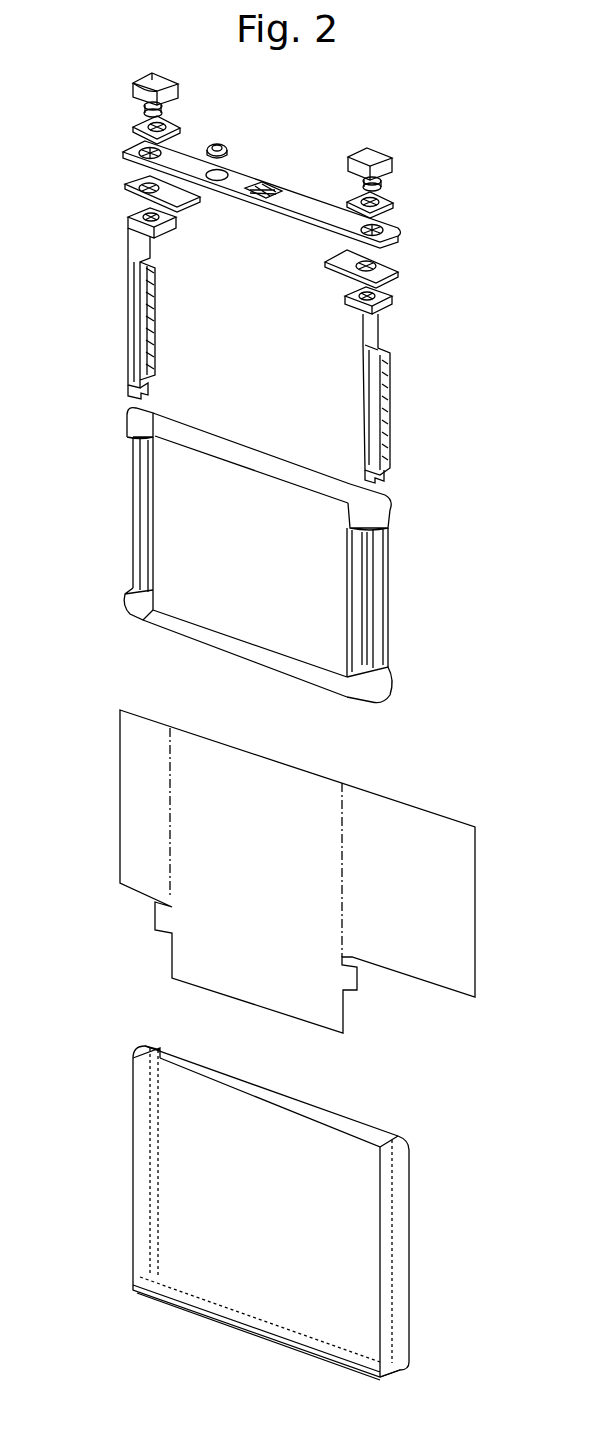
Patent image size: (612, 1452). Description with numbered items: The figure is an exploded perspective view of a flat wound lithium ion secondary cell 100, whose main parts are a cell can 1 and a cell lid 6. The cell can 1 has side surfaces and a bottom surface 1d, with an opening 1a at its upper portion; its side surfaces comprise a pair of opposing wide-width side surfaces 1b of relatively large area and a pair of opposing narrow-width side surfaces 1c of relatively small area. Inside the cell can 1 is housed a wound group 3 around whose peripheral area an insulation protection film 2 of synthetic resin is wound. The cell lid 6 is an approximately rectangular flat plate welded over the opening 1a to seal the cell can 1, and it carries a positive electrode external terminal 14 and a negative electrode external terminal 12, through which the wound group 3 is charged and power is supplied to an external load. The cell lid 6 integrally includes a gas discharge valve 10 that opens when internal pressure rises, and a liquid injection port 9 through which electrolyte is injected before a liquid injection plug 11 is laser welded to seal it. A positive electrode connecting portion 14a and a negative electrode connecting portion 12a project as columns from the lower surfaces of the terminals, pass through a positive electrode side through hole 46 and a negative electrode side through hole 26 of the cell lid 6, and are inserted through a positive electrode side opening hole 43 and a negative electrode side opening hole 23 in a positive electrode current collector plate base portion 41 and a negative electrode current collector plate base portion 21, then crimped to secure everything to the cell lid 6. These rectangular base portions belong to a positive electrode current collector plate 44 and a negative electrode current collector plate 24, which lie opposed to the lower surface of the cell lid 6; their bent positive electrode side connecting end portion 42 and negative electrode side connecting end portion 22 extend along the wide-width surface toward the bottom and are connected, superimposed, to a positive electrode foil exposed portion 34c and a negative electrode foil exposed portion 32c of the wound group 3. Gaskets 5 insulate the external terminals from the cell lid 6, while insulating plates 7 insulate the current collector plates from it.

The flat wound lithium ion secondary cell 100 is at (503, 186).
The cell can 1 is at (416, 1245).
The opening 1a is at (135, 1052).
The wide-width side surfaces 1b is at (190, 1220).
The narrow-width side surfaces 1c is at (400, 1300).
The bottom surface 1d is at (232, 1310).
The insulation protection film 2 is at (475, 928).
The wound group 3 is at (392, 593).
The negative electrode foil exposed portion 32c is at (377, 628).
The positive electrode foil exposed portion 34c is at (134, 540).
The gasket 5 is at (133, 129).
The cell lid 6 is at (323, 205).
The insulating plate 7 is at (125, 184).
The liquid injection port 9 is at (220, 172).
The gas discharge valve 10 is at (265, 187).
The liquid injection plug 11 is at (216, 143).
The negative electrode external terminal 12 is at (390, 153).
The negative electrode connecting portion 12a is at (382, 182).
The positive electrode external terminal 14 is at (133, 84).
The positive electrode connecting portion 14a is at (144, 106).
The negative electrode current collector plate base portion 21 is at (392, 294).
The negative electrode side connecting end portion 22 is at (386, 435).
The negative electrode side opening hole 23 is at (348, 296).
The negative electrode current collector plate 24 is at (386, 395).
The negative electrode side through hole 26 is at (385, 229).
The positive electrode current collector plate base portion 41 is at (130, 218).
The positive electrode side connecting end portion 42 is at (138, 362).
The positive electrode side opening hole 43 is at (160, 220).
The positive electrode current collector plate 44 is at (134, 316).
The positive electrode side through hole 46 is at (140, 154).